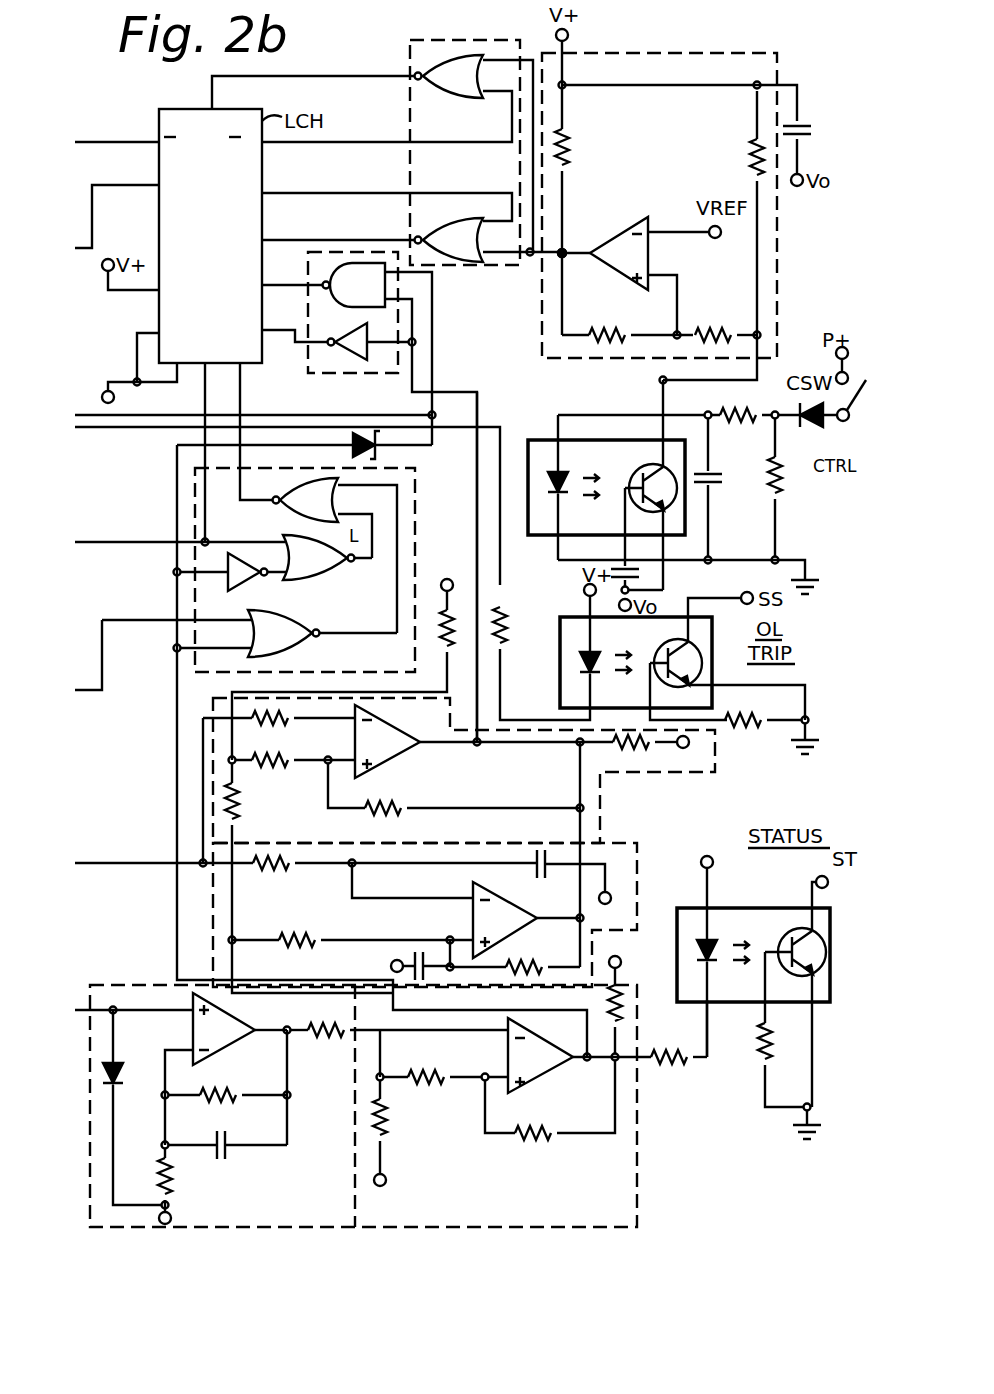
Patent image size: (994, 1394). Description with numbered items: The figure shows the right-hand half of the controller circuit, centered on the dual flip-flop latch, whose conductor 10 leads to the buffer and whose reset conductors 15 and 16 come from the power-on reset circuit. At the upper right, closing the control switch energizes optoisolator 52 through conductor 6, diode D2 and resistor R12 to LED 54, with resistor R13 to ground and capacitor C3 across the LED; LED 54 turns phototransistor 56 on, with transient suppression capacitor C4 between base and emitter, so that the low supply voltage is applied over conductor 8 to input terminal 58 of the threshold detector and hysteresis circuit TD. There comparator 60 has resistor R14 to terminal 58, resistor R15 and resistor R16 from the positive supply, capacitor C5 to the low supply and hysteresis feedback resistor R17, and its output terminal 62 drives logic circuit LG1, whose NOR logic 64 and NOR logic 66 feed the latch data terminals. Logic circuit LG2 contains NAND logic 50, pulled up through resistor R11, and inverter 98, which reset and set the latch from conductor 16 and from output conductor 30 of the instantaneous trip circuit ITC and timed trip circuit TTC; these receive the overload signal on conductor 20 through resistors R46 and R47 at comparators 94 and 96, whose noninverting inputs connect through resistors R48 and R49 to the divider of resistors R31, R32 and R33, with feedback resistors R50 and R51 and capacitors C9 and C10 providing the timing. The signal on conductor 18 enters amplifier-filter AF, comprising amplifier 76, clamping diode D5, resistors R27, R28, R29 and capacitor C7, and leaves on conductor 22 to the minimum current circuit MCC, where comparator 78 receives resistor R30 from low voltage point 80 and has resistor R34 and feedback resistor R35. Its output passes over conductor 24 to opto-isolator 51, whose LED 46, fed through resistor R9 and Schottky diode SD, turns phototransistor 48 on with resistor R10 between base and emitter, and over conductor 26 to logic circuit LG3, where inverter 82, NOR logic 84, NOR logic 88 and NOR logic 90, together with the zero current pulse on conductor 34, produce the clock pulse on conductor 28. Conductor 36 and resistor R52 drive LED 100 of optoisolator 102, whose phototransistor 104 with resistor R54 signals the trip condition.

The conductor 10 is at (127, 140).
The conductor 15 is at (93, 214).
The conductor 16 is at (180, 388).
The conductor 28 is at (243, 392).
The NAND logic 50 is at (338, 306).
The inverter 98 is at (368, 339).
The NOR logic 66 is at (449, 91).
The NOR logic 64 is at (448, 220).
The comparator 60 is at (630, 238).
The output terminal 62 is at (566, 256).
The input terminal 58 is at (760, 334).
The conductor 8 is at (662, 390).
The conductor 6 is at (845, 422).
The optoisolator 52 is at (548, 438).
The LED 54 is at (582, 480).
The phototransistor 56 is at (636, 480).
The NOR logic 88 is at (286, 482).
The NOR logic 84 is at (335, 564).
The inverter 82 is at (238, 574).
The NOR logic 90 is at (304, 632).
The conductor 34 is at (138, 614).
The conductor 26 is at (177, 912).
The conductor 30 is at (477, 529).
The conductor 36 is at (505, 568).
The comparator 94 is at (400, 728).
The comparator 96 is at (522, 892).
The conductor 20 is at (139, 862).
The conductor 18 is at (76, 1006).
The amplifier 76 is at (244, 1022).
The conductor 22 is at (430, 1030).
The low voltage point 80 is at (382, 1074).
The minimum current comparator 78 is at (572, 1062).
The optoisolator 102 is at (580, 614).
The LED 100 is at (602, 660).
The phototransistor 104 is at (662, 662).
The opto-isolator 51 is at (766, 906).
The light emitting diode 46 is at (718, 942).
The phototransistor 48 is at (784, 948).
The conductor 24 is at (710, 1015).
The logic circuit LG1 is at (410, 42).
The logic circuit LG2 is at (362, 380).
The logic circuit LG3 is at (415, 510).
The threshold detector and hysteresis circuit TD is at (710, 53).
The instantaneous trip circuit ITC is at (600, 818).
The timed trip circuit TTC is at (637, 905).
The amplifier-filter AF is at (168, 981).
The minimum current circuit MCC is at (640, 1130).
The Schottky diode SD is at (346, 447).
The resistor R9 is at (670, 1062).
The resistor R10 is at (760, 1054).
The pull-up resistor R11 is at (642, 759).
The resistor R12 is at (734, 404).
The resistor R13 is at (781, 482).
The resistor R14 is at (738, 310).
The resistor R15 is at (575, 156).
The resistor R16 is at (750, 174).
The hysteresis feedback resistor R17 is at (638, 324).
The resistor R27 is at (172, 1184).
The resistor R28 is at (224, 1090).
The resistor R29 is at (346, 1036).
The resistor R30 is at (434, 1074).
The resistor R31 is at (432, 651).
The resistor R32 is at (238, 817).
The resistor R33 is at (398, 1117).
The resistor R34 is at (624, 1012).
The feedback resistor R35 is at (532, 1140).
The resistor R46 is at (288, 740).
The resistor R47 is at (282, 874).
The resistor R48 is at (280, 776).
The resistor R49 is at (294, 938).
The feedback resistor R50 is at (388, 800).
The feedback resistor R51 is at (536, 956).
The resistor R52 is at (526, 654).
The resistor R54 is at (738, 734).
The capacitor C3 is at (722, 478).
The transient suppression capacitor C4 is at (660, 578).
The capacitor C5 is at (814, 127).
The capacitor C7 is at (226, 1168).
The timing capacitor C9 is at (550, 874).
The capacitor C10 is at (416, 944).
The unidirectional diode D2 is at (807, 431).
The clamping diode D5 is at (128, 1080).